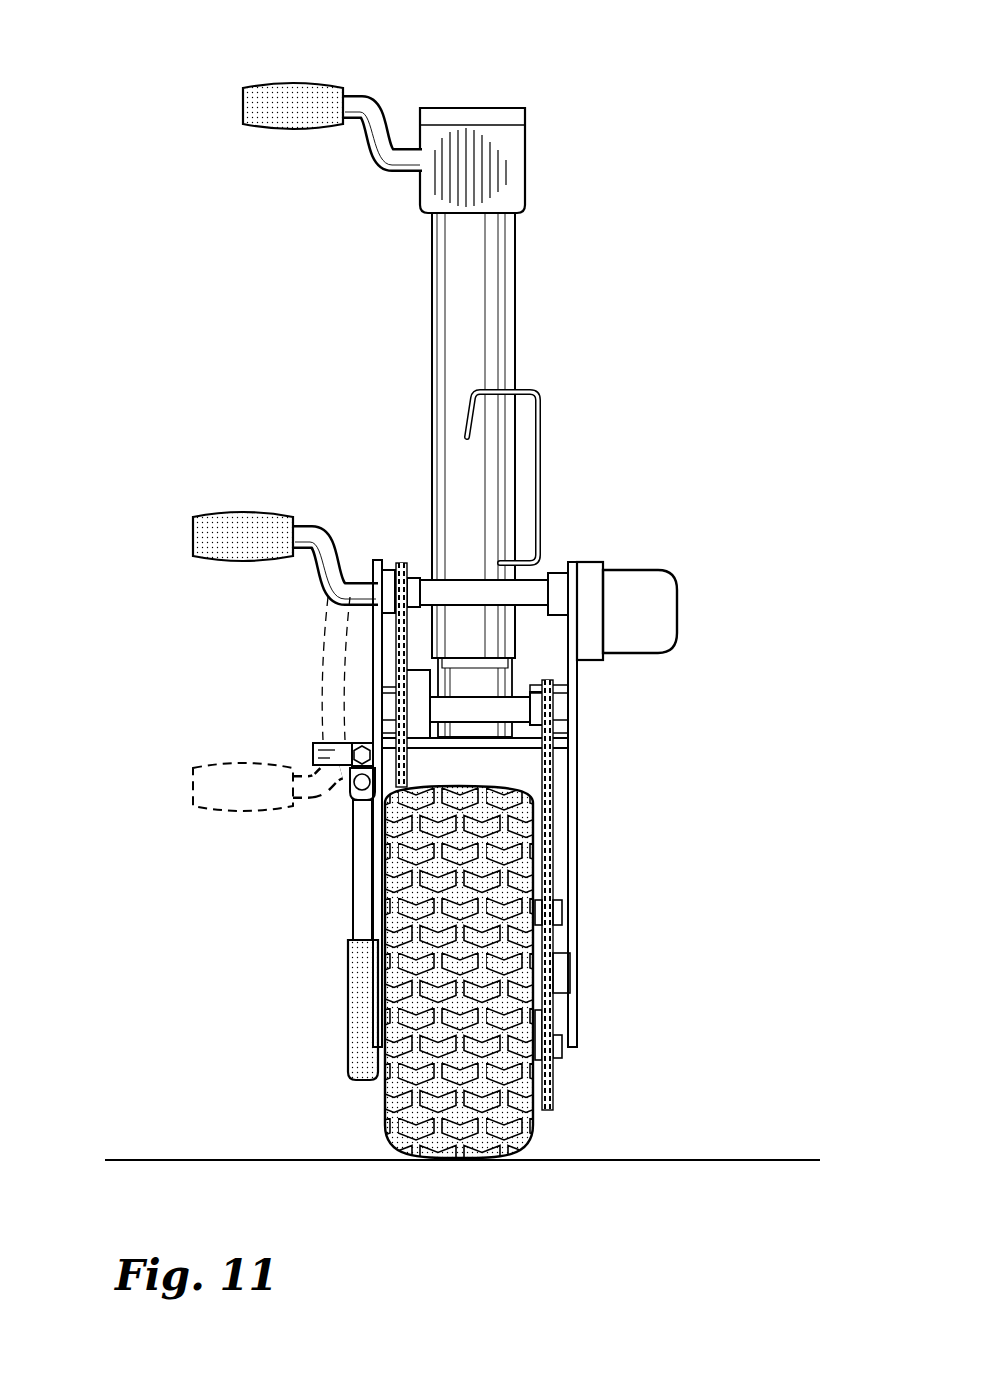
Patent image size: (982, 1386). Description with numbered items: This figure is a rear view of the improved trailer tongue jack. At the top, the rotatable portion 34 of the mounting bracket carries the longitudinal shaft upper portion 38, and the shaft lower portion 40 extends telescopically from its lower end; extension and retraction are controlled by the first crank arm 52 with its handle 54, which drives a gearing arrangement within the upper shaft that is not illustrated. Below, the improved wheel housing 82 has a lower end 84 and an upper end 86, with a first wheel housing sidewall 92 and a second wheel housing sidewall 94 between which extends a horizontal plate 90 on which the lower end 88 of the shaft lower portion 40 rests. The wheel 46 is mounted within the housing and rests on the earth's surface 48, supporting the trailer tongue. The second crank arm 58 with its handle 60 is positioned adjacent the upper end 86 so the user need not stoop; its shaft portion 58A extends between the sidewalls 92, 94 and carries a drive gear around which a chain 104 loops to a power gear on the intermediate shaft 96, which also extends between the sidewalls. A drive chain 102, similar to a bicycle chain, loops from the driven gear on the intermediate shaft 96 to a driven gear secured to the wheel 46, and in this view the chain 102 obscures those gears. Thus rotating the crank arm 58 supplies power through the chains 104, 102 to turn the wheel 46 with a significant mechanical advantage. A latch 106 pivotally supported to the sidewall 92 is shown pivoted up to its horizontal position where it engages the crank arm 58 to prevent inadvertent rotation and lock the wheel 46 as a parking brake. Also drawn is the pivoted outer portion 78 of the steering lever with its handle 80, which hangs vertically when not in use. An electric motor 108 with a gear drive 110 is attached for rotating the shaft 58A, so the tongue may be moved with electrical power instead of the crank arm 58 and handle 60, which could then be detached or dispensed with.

The rotatable portion 34 is at (540, 393).
The shaft upper portion 38 is at (498, 290).
The shaft lower portion 40 is at (480, 685).
The wheel 46 is at (460, 1108).
The earth's surface 48 is at (700, 1160).
The first crank arm 52 is at (372, 105).
The handle 54 is at (277, 100).
The second crank arm 58 is at (318, 535).
The shaft portion 58A is at (473, 592).
The handle 60 is at (218, 530).
The pivoted outer portion 78 is at (362, 868).
The handle 80 is at (360, 990).
The wheel housing 82 is at (664, 513).
The lower end 84 is at (573, 1050).
The upper end 86 is at (568, 562).
The lower end 88 is at (473, 742).
The horizontal plate 90 is at (560, 744).
The first wheel housing sidewall 92 is at (375, 903).
The second wheel housing sidewall 94 is at (578, 860).
The intermediate shaft 96 is at (450, 708).
The drive chain 102 is at (553, 868).
The chain 104 is at (400, 668).
The latch 106 is at (325, 752).
The electric motor 108 is at (648, 600).
The gear drive 110 is at (590, 572).